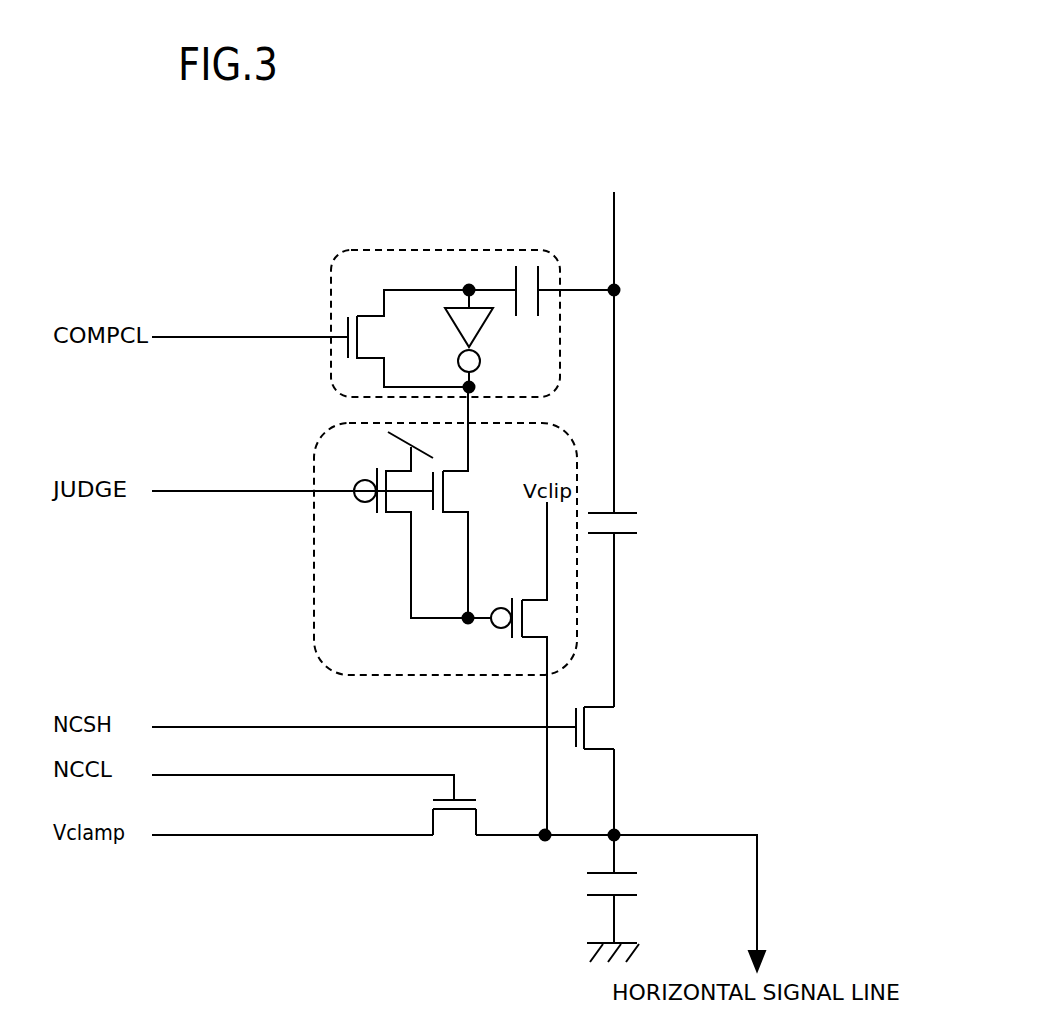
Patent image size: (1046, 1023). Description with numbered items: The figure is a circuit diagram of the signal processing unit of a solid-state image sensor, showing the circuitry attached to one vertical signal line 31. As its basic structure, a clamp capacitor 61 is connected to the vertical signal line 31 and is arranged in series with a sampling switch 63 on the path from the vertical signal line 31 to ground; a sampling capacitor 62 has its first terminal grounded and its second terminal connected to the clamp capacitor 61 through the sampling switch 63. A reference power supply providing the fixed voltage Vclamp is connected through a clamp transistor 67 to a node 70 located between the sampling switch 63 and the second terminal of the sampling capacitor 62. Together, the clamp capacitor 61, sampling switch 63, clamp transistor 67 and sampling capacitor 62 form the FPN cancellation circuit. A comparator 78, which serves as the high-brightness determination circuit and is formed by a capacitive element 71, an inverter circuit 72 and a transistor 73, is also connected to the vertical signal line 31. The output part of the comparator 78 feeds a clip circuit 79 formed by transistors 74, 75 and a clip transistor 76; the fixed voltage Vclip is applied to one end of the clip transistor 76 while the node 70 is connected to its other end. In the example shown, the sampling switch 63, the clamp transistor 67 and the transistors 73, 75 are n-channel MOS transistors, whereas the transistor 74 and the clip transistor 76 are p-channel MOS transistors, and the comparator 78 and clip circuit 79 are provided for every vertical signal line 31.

The vertical signal line 31 is at (667, 535).
The clamp capacitor 61 is at (637, 522).
The sampling capacitor 62 is at (637, 884).
The sampling switch 63 is at (612, 728).
The clamp transistor 67 is at (452, 838).
The node 70 is at (622, 830).
The capacitive element 71 is at (538, 310).
The inverter circuit 72 is at (483, 327).
The transistor 73 is at (348, 318).
The transistor 74 is at (375, 506).
The transistor 75 is at (427, 512).
The clip transistor 76 is at (512, 637).
The comparator 78 is at (333, 262).
The clip circuit 79 is at (318, 446).